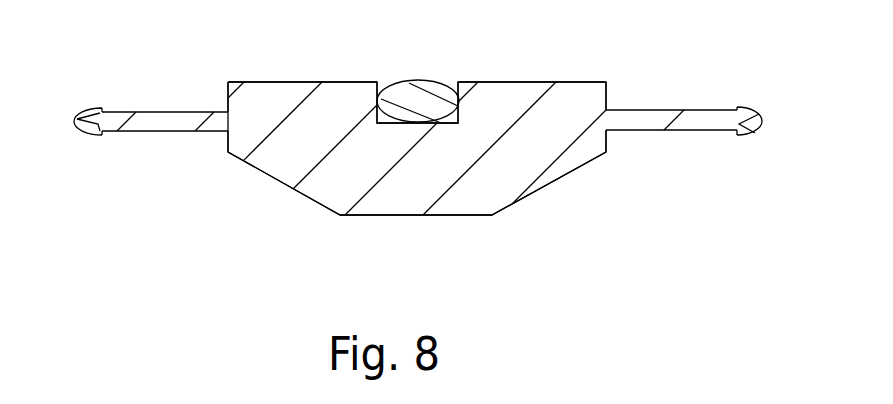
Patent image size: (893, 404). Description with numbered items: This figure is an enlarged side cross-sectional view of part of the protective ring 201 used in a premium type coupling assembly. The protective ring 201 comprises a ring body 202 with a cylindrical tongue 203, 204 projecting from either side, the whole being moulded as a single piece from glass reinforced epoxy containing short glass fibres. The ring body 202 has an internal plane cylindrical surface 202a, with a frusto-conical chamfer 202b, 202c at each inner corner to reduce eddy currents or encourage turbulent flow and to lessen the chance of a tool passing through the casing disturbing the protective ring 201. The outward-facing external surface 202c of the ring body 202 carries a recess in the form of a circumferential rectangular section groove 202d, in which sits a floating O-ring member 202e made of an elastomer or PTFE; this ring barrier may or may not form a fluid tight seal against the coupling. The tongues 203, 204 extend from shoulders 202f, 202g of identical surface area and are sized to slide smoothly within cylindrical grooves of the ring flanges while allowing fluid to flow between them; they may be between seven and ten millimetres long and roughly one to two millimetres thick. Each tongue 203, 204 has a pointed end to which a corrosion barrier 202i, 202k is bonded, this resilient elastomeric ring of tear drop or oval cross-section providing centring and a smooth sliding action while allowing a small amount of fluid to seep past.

The protective ring 201 is at (515, 205).
The ring body 202 is at (370, 218).
The internal plane cylindrical surface 202a is at (405, 216).
The frusto-conical chamfer 202b is at (262, 172).
The external surface 202c is at (272, 82).
The circumferential rectangular section groove 202d is at (357, 104).
The floating O-ring member 202e is at (413, 102).
The shoulder 202f is at (227, 93).
The shoulder 202g is at (607, 97).
The corrosion barrier 202i is at (747, 137).
The corrosion barrier 202k is at (90, 137).
The cylindrical tongue 203 is at (150, 131).
The cylindrical tongue 204 is at (652, 130).